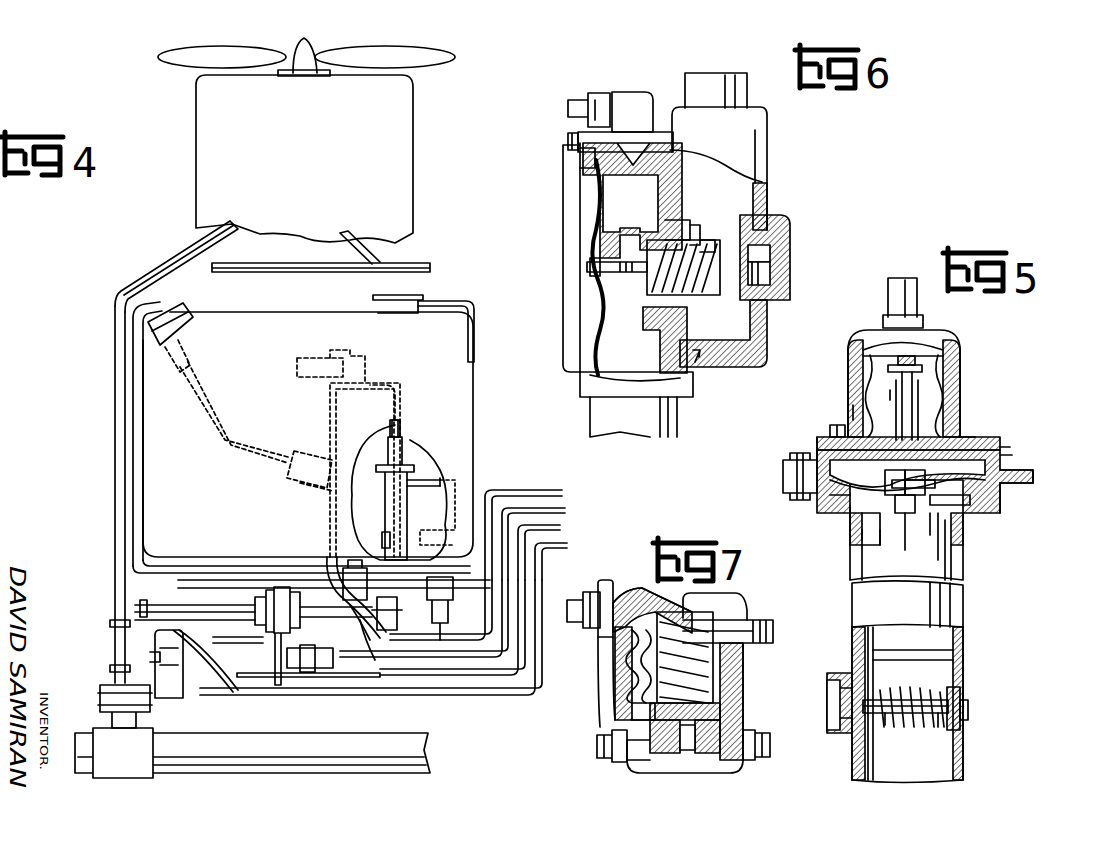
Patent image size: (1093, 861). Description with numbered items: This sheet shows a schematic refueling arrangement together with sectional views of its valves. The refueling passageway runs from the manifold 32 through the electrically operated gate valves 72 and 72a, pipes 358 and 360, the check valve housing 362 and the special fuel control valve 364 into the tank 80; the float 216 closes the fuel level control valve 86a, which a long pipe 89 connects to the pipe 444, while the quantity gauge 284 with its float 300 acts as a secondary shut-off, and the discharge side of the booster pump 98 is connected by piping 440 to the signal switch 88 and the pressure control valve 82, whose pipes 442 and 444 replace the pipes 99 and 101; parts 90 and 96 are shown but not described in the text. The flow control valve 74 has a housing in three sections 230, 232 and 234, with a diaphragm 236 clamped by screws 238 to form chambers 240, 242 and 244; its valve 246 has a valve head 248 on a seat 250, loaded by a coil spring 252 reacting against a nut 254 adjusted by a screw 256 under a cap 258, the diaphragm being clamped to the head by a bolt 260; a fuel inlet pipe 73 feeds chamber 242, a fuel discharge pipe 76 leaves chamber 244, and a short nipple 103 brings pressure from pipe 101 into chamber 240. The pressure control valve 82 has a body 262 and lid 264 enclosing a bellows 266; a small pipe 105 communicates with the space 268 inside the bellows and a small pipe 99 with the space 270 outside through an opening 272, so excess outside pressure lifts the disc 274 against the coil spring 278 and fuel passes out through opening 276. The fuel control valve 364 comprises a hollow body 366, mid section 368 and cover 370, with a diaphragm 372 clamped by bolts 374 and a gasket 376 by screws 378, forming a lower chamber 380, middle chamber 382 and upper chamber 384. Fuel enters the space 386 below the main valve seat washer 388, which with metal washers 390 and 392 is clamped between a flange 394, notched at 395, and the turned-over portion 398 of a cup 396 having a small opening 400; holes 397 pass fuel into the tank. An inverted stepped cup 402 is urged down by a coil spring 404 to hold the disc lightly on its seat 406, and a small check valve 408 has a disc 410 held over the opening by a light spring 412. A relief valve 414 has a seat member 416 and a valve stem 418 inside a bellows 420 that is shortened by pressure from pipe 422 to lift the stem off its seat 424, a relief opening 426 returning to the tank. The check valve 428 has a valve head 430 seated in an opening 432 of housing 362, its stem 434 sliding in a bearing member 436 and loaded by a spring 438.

In FIG. 4, the manifold 32 is at (250, 755).
In FIG. 4, the electrically operated gate valve 72 is at (102, 692).
In FIG. 4, the electrically operated gate valve 72a is at (256, 630).
In FIG. 6, the fuel inlet pipe 73 is at (592, 423).
In FIG. 6, the flow control valve 74 is at (781, 137).
In FIG. 6, the fuel discharge pipe 76 is at (748, 98).
In FIG. 4, the tank 80 is at (258, 341).
In FIG. 4, the pressure control valve 82 is at (375, 660).
In FIG. 7, the pressure control valve 82 is at (772, 600).
In FIG. 4, the fuel level control valve 86a is at (392, 421).
In FIG. 4, the signal switch 88 is at (446, 600).
In FIG. 4, the long pipe 89 is at (328, 418).
In FIG. 4, the pipe 90 is at (114, 463).
In FIG. 4, the upper tank 96 is at (359, 193).
In FIG. 4, the booster pump 98 is at (440, 478).
In FIG. 7, the small pipe 99 is at (597, 745).
In FIG. 7, the pipe 101 is at (772, 735).
In FIG. 6, the short nipple 103 is at (582, 100).
In FIG. 7, the small pipe 105 is at (585, 622).
In FIG. 4, the float 216 is at (300, 379).
In FIG. 6, the housing section 230 is at (568, 219).
In FIG. 6, the middle housing section 232 is at (665, 132).
In FIG. 6, the housing section 234 is at (768, 190).
In FIG. 6, the diaphragm 236 is at (592, 321).
In FIG. 6, the screws 238 is at (566, 142).
In FIG. 6, the chamber 240 is at (588, 192).
In FIG. 6, the middle chamber 242 is at (644, 197).
In FIG. 6, the chamber 244 is at (724, 188).
In FIG. 6, the valve 246 is at (715, 360).
In FIG. 6, the valve head 248 is at (726, 203).
In FIG. 6, the seat 250 is at (688, 322).
In FIG. 6, the coil spring 252 is at (700, 240).
In FIG. 6, the nut 254 is at (760, 286).
In FIG. 6, the screw 256 is at (775, 258).
In FIG. 6, the cap 258 is at (780, 222).
In FIG. 6, the bolt 260 is at (590, 273).
In FIG. 7, the body 262 is at (750, 678).
In FIG. 7, the lid 264 is at (775, 634).
In FIG. 7, the bellows 266 is at (633, 670).
In FIG. 7, the space inside the bellows 268 is at (640, 690).
In FIG. 7, the space outside the bellows 270 is at (635, 706).
In FIG. 7, the opening 272 is at (662, 745).
In FIG. 7, the disc 274 is at (725, 713).
In FIG. 7, the opening 276 is at (690, 745).
In FIG. 7, the coil spring 278 is at (705, 662).
In FIG. 4, the quantity gauge 284 is at (216, 362).
In FIG. 4, the float 300 is at (302, 484).
In FIG. 4, the pipe 358 is at (308, 652).
In FIG. 4, the pipe 360 is at (399, 616).
In FIG. 4, the check valve housing 362 is at (382, 540).
In FIG. 5, the check valve housing 362 is at (965, 760).
In FIG. 4, the special fuel control valve 364 is at (385, 500).
In FIG. 5, the special fuel control valve 364 is at (992, 532).
In FIG. 5, the hollow body 366 is at (965, 520).
In FIG. 5, the mid section 368 is at (817, 442).
In FIG. 5, the cover 370 is at (945, 375).
In FIG. 5, the diaphragm 372 is at (1002, 490).
In FIG. 5, the bolts 374 is at (783, 470).
In FIG. 5, the gasket 376 is at (975, 432).
In FIG. 5, the screws 378 is at (828, 432).
In FIG. 5, the lower chamber 380 is at (970, 506).
In FIG. 5, the middle chamber 382 is at (1012, 460).
In FIG. 5, the upper chamber 384 is at (950, 356).
In FIG. 5, the space 386 is at (930, 535).
In FIG. 5, the main valve seat washer 388 is at (830, 495).
In FIG. 5, the metal washer 390 is at (990, 500).
In FIG. 5, the metal washer 392 is at (1010, 465).
In FIG. 5, the flange 394 is at (945, 545).
In FIG. 5, the notches 395 is at (858, 538).
In FIG. 5, the cup 396 is at (950, 545).
In FIG. 5, the circular row of holes 397 is at (850, 510).
In FIG. 5, the turned-over portion 398 is at (817, 455).
In FIG. 5, the small opening 400 is at (905, 510).
In FIG. 5, the inverted stepped cup 402 is at (890, 472).
In FIG. 5, the coil spring 404 is at (853, 410).
In FIG. 5, the seat 406 is at (870, 522).
In FIG. 5, the small check valve 408 is at (880, 538).
In FIG. 5, the disc 410 is at (925, 513).
In FIG. 5, the light spring 412 is at (918, 472).
In FIG. 5, the relief valve 414 is at (925, 392).
In FIG. 5, the seat member 416 is at (890, 390).
In FIG. 5, the valve stem 418 is at (920, 410).
In FIG. 5, the bellows 420 is at (962, 338).
In FIG. 4, the pipe 422 is at (404, 412).
In FIG. 5, the pipe 422 is at (888, 301).
In FIG. 5, the seat 424 is at (912, 425).
In FIG. 5, the relief opening 426 is at (1010, 447).
In FIG. 5, the check valve 428 is at (942, 675).
In FIG. 5, the valve head 430 is at (956, 697).
In FIG. 5, the opening 432 is at (962, 722).
In FIG. 5, the stem 434 is at (938, 727).
In FIG. 5, the bearing member 436 is at (890, 715).
In FIG. 5, the spring 438 is at (888, 690).
In FIG. 4, the piping 440 is at (374, 562).
In FIG. 4, the pipe 442 is at (370, 640).
In FIG. 4, the pipe 444 is at (330, 573).